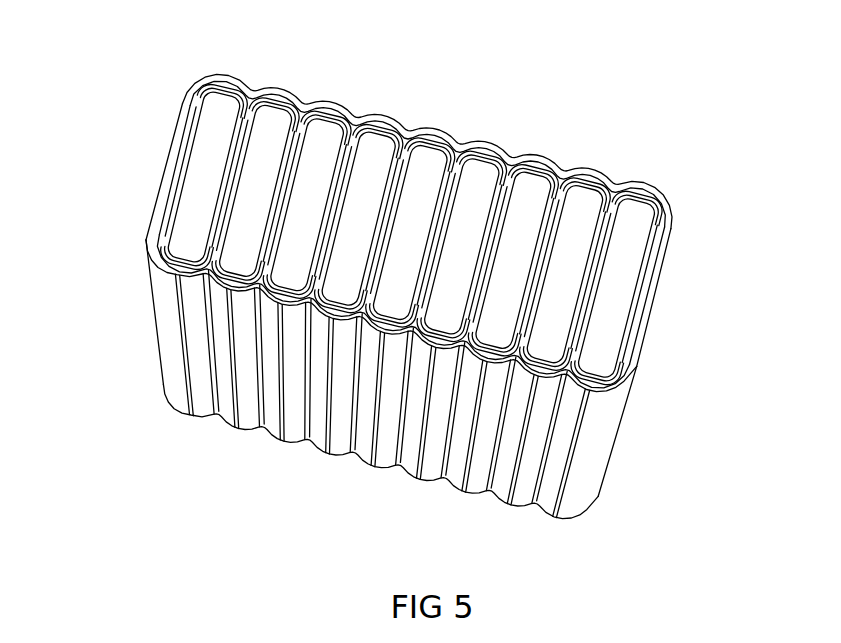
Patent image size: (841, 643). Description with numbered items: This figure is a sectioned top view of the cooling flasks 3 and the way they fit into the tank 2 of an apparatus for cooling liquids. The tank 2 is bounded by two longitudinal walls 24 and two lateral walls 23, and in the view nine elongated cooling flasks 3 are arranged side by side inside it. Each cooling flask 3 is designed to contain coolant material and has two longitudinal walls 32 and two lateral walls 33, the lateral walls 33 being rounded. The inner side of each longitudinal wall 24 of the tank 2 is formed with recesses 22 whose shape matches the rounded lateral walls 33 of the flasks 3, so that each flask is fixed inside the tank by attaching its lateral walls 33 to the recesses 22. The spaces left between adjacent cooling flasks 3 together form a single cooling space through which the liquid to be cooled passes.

The tank 2 is at (197, 344).
The cooling flask 3 is at (330, 133).
The recess 22 is at (492, 160).
The lateral wall 23 is at (160, 203).
The longitudinal wall 24 is at (440, 133).
The longitudinal wall 32 is at (208, 110).
The lateral wall 33 is at (283, 93).